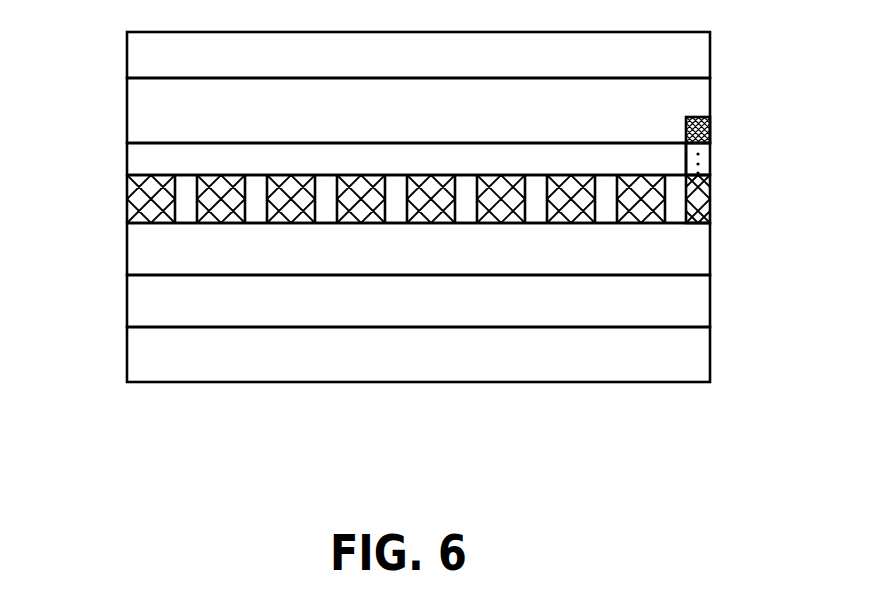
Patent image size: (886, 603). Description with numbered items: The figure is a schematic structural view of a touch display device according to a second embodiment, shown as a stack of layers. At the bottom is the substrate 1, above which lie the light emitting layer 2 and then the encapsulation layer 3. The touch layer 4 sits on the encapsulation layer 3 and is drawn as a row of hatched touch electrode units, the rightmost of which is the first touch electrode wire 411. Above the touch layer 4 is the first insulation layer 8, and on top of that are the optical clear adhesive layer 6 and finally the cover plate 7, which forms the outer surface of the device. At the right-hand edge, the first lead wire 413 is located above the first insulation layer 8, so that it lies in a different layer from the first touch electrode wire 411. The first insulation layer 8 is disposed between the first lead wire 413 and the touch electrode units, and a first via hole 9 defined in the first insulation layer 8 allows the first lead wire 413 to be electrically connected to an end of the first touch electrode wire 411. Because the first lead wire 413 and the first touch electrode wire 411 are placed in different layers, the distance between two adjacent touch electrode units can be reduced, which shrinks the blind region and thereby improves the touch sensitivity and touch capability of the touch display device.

The substrate 1 is at (711, 352).
The light emitting layer 2 is at (711, 300).
The encapsulation layer 3 is at (711, 250).
The touch layer 4 is at (123, 196).
The first touch electrode wire 411 is at (711, 196).
The first lead wire 413 is at (711, 120).
The optical clear adhesive layer 6 is at (127, 120).
The cover plate 7 is at (127, 55).
The first insulation layer 8 is at (127, 160).
The first via hole 9 is at (711, 158).